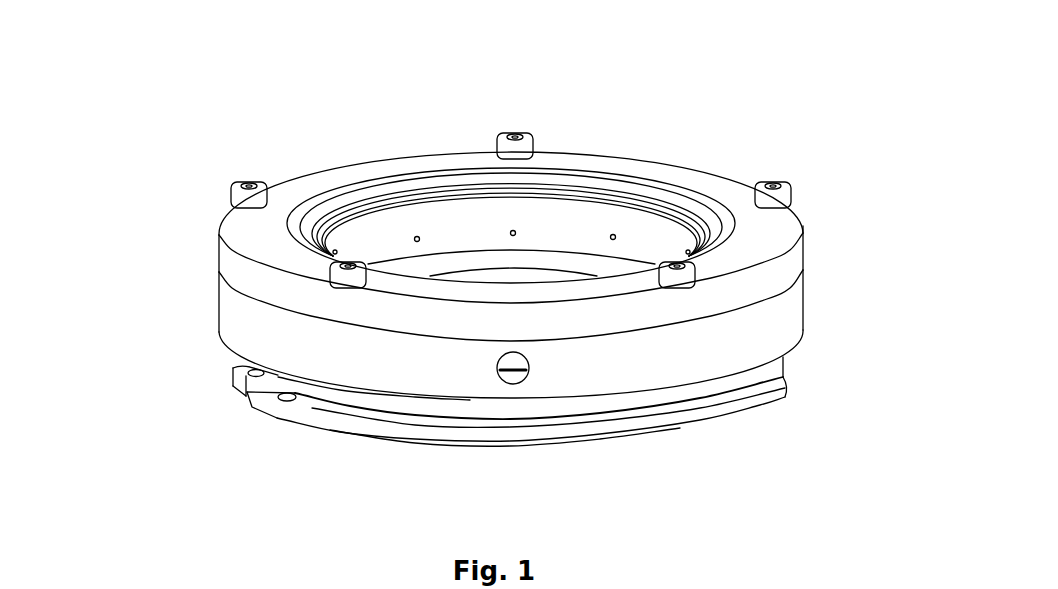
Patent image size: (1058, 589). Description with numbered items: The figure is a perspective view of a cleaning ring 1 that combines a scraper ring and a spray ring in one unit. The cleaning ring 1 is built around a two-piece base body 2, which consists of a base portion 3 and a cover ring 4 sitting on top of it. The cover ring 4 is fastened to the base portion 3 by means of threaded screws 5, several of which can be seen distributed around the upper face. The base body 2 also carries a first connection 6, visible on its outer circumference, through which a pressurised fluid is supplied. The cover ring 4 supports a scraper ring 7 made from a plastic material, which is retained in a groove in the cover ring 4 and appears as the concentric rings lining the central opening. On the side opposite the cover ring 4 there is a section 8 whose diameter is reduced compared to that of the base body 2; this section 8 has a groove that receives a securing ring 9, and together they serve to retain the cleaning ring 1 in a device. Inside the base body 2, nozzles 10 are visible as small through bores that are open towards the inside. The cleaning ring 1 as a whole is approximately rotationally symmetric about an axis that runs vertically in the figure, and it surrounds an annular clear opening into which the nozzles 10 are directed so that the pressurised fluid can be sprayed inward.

The cleaning ring 1 is at (300, 485).
The base body 2 is at (608, 375).
The base portion 3 is at (762, 322).
The cover ring 4 is at (703, 176).
The threaded screws 5 is at (236, 183).
The first connection 6 is at (513, 384).
The scraper ring 7 is at (367, 198).
The section 8 is at (455, 406).
The securing ring 9 is at (232, 387).
The nozzles 10 is at (513, 230).